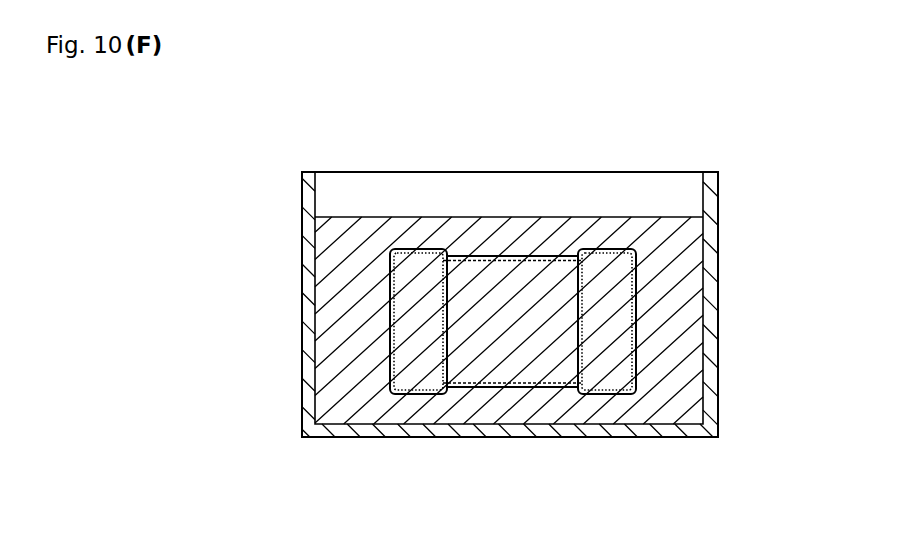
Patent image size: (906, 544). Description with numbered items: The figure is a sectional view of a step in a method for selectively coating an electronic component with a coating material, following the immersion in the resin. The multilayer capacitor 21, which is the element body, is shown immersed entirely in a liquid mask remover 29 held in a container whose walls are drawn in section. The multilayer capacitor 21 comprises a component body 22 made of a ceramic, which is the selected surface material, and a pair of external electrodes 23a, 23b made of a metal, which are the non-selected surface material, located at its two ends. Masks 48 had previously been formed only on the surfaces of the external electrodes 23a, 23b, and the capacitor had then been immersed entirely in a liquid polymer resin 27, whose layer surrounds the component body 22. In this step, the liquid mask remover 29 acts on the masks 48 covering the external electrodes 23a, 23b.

The liquid mask remover 29 is at (352, 248).
The multilayer capacitor 21 is at (507, 262).
The component body 22 is at (495, 320).
The liquid polymer resin 27 is at (523, 308).
The masks 48 is at (430, 307).
The external electrode 23a is at (432, 344).
The external electrode 23b is at (612, 340).